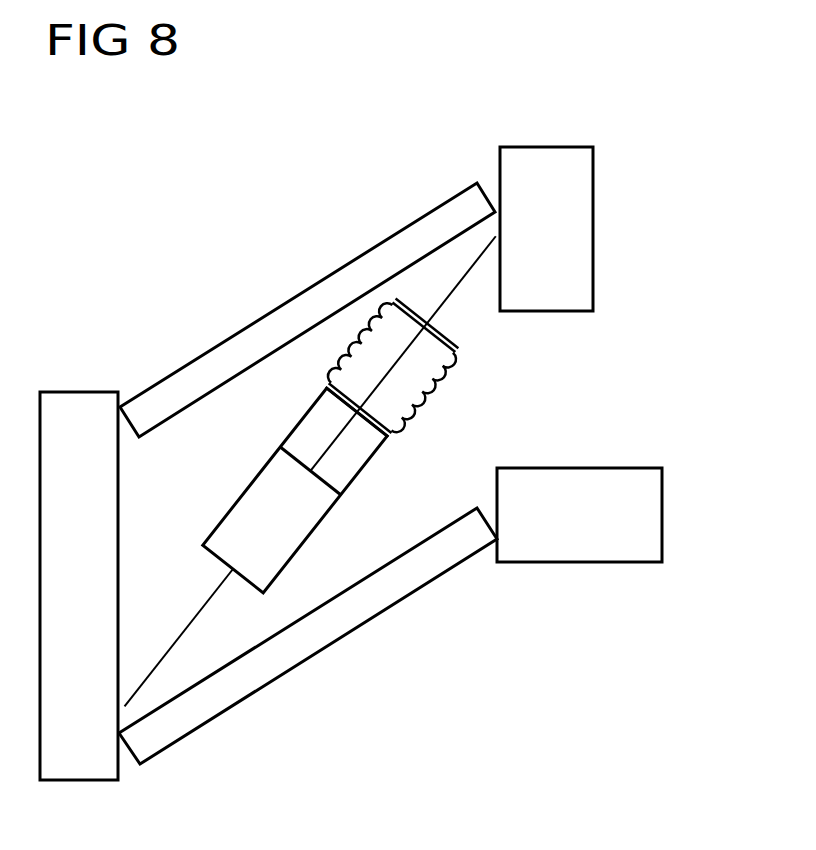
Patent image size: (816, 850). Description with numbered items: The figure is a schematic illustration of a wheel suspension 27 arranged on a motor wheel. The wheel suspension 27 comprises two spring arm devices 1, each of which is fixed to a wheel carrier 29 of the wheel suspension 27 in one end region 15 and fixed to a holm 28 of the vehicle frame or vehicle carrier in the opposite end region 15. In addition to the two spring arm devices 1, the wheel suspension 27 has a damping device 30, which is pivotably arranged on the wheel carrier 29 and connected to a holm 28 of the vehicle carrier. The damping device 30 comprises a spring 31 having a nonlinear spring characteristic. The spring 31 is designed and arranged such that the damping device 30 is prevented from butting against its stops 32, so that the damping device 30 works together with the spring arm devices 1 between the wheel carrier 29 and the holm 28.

The spring arm device 1 is at (305, 307).
The end region 15 is at (476, 202).
The wheel suspension 27 is at (101, 177).
The holm 28 is at (553, 160).
The wheel carrier 29 is at (70, 407).
The damping device 30 is at (338, 573).
The spring 31 is at (427, 368).
The stop 32 is at (323, 398).